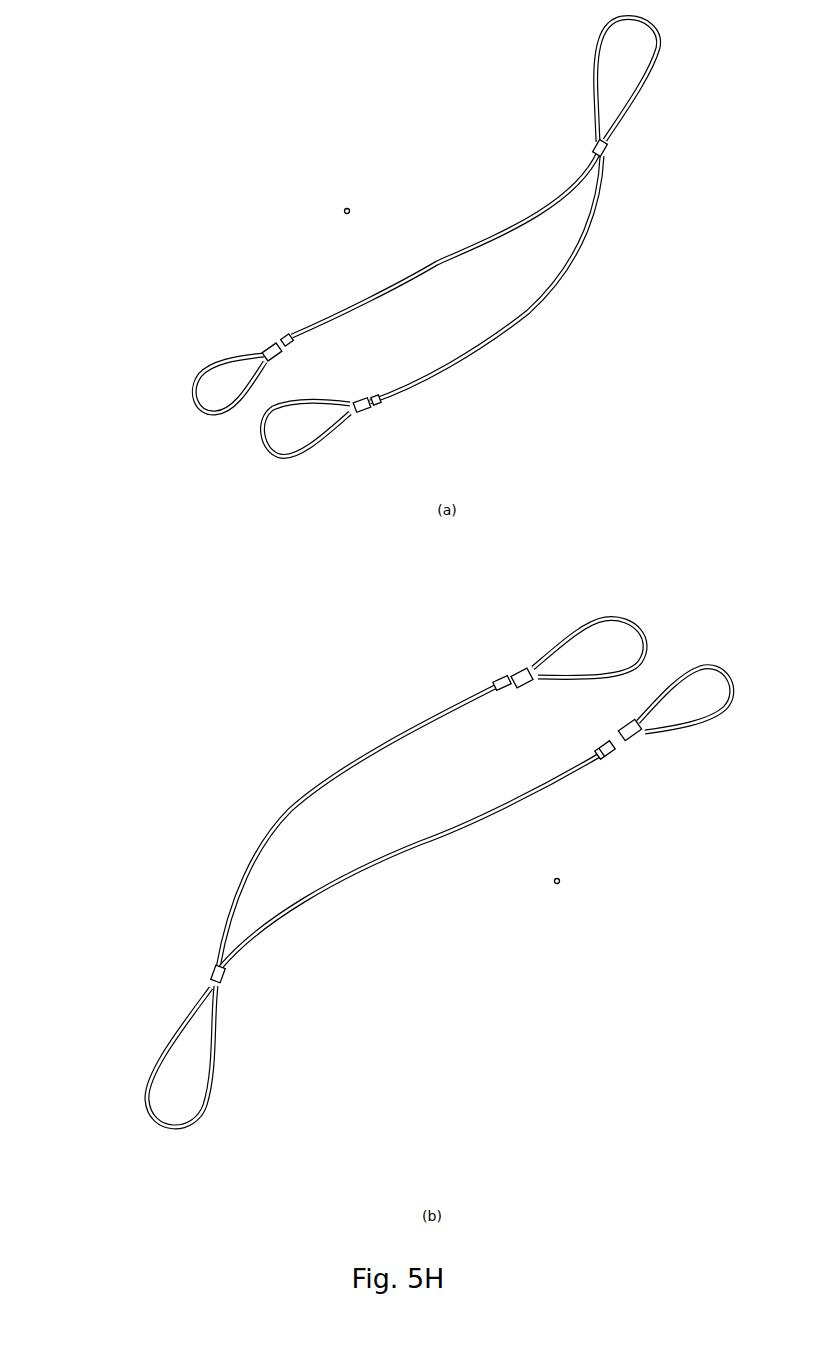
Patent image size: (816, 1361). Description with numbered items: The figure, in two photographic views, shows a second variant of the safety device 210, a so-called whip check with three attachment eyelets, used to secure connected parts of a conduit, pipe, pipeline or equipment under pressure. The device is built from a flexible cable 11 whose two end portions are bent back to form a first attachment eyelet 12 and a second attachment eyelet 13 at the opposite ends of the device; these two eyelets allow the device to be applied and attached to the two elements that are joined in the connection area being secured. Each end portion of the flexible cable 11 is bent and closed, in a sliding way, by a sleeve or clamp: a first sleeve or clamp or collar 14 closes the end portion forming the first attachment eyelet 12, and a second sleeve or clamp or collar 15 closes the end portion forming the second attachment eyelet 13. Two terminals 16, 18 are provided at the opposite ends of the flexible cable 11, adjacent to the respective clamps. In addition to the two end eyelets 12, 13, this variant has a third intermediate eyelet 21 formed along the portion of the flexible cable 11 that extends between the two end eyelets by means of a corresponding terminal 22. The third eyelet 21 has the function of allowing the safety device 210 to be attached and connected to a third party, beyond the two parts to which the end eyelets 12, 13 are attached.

The flexible cable 11 is at (437, 263).
The first attachment eyelet 12 is at (203, 367).
The second attachment eyelet 13 is at (300, 455).
The first sleeve or clamp or collar 14 is at (268, 347).
The second sleeve or clamp or collar 15 is at (362, 412).
The terminal 16 is at (290, 334).
The terminal 18 is at (602, 758).
The third intermediate eyelet 21 is at (660, 42).
The terminal 22 is at (596, 146).
The safety device 210 is at (343, 207).